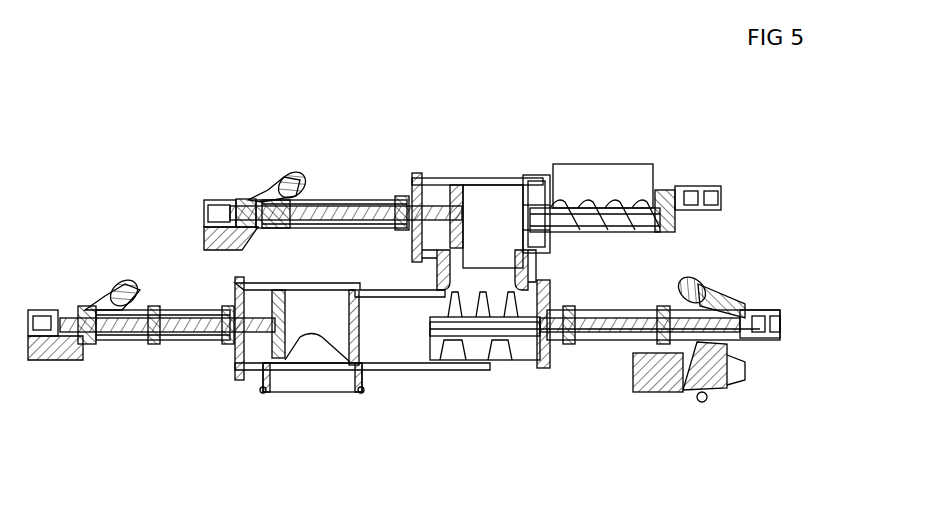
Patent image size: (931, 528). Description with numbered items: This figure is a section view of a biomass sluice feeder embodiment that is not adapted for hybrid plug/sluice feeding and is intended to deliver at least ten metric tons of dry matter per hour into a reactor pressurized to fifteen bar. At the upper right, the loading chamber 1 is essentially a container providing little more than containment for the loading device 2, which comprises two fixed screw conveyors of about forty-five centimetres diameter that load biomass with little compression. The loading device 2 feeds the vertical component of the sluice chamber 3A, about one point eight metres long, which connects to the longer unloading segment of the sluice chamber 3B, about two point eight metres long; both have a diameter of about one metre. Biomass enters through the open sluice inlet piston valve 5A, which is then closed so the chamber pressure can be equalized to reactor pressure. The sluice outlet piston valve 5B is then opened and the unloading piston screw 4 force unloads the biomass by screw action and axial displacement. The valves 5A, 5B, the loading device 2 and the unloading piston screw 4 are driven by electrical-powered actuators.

The loading chamber 1 is at (577, 182).
The loading device 2 is at (638, 220).
The vertical component of the sluice chamber 3A is at (494, 220).
The unloading segment of the sluice chamber 3B is at (385, 325).
The unloading piston screw 4 is at (490, 325).
The sluice inlet piston valve 5A is at (355, 213).
The sluice outlet piston valve 5B is at (124, 325).